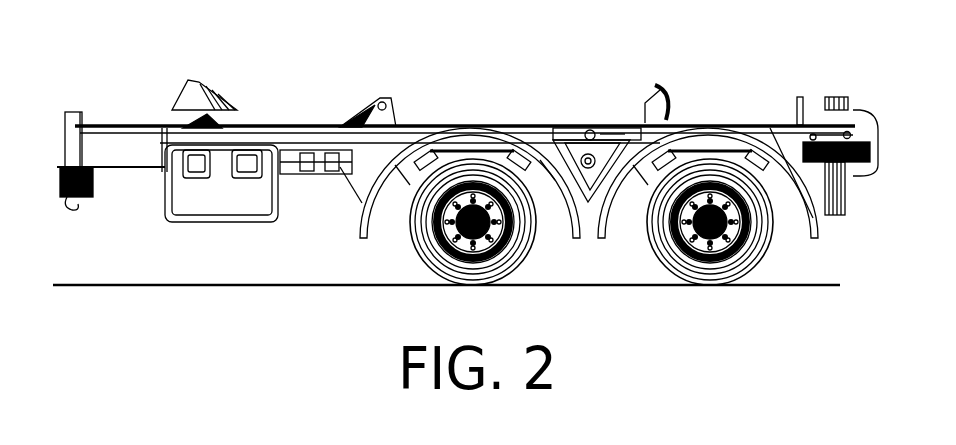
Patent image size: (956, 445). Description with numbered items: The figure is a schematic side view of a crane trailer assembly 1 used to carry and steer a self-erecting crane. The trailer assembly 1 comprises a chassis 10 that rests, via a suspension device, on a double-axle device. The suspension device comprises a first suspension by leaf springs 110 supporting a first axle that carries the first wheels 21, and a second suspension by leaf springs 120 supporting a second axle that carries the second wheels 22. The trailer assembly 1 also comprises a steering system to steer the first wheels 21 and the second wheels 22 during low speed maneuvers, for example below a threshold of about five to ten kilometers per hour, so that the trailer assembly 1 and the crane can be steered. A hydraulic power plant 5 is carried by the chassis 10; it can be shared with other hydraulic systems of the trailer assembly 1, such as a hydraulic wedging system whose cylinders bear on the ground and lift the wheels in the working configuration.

The trailer assembly 1 is at (163, 70).
The chassis 10 is at (311, 116).
The hydraulic power plant 5 is at (222, 205).
The second suspension by leaf springs 120 is at (408, 160).
The first suspension by leaf springs 110 is at (766, 150).
The second wheels 22 is at (407, 274).
The first wheels 21 is at (776, 273).